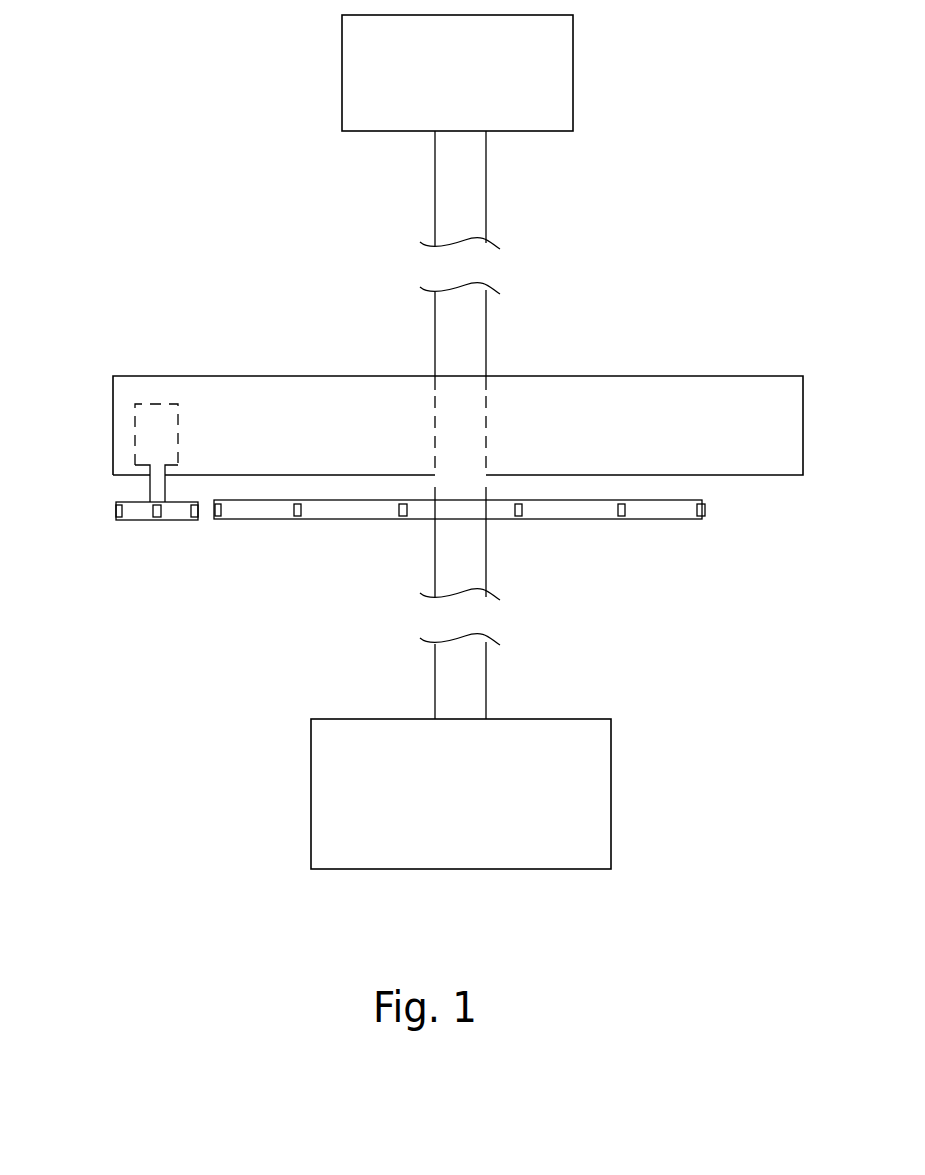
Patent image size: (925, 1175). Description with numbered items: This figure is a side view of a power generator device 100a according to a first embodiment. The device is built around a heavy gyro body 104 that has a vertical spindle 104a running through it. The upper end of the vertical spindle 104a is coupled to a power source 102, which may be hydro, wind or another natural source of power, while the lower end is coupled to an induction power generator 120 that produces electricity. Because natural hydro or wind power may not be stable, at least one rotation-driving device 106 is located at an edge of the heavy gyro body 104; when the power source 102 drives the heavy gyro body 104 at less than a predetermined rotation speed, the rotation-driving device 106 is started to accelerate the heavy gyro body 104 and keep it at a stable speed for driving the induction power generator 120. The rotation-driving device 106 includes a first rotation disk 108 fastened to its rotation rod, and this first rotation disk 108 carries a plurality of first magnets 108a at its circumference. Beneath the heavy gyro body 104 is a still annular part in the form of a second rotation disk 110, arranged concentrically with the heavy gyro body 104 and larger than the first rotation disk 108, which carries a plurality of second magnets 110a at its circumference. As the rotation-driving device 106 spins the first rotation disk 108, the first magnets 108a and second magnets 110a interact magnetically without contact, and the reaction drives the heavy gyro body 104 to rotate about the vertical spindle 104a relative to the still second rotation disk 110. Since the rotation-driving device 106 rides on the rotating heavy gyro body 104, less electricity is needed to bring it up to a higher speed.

The power generator device 100a is at (190, 53).
The power source 102 is at (573, 71).
The heavy gyro body 104 is at (315, 387).
The vertical spindle 104a is at (473, 345).
The rotation-driving device 106 is at (143, 432).
The first rotation disk 108 is at (132, 518).
The first magnets 108a is at (157, 520).
The second rotation disk 110 is at (342, 516).
The second magnets 110a is at (404, 518).
The induction power generator 120 is at (611, 792).